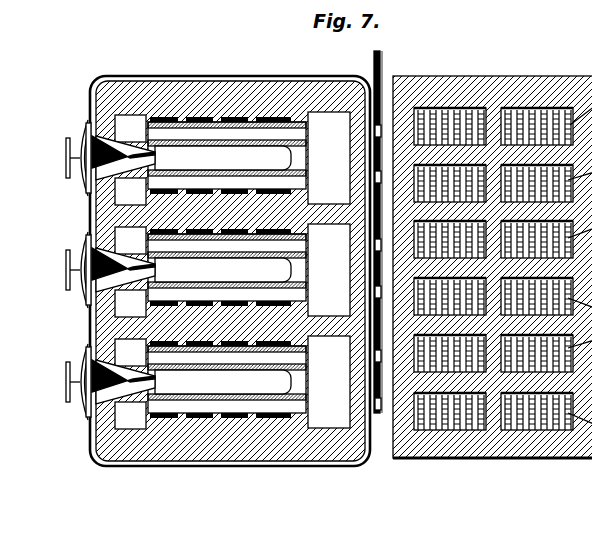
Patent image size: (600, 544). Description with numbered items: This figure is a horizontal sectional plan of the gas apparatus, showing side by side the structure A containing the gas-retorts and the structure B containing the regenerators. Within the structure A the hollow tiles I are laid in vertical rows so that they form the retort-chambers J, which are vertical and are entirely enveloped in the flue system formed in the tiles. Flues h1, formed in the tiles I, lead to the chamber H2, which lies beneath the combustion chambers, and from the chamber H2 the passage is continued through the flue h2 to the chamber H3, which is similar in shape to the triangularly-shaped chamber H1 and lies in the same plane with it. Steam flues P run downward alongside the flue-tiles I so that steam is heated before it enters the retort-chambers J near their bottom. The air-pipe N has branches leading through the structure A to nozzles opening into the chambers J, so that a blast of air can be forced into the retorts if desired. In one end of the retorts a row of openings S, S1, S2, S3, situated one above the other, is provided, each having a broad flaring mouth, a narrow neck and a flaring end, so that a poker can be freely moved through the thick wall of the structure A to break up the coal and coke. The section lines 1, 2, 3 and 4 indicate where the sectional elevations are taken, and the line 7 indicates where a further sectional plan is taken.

The structure containing the gas-retorts A is at (251, 71).
The structure containing the regenerators B is at (492, 70).
The air-pipe N is at (372, 56).
The triangularly-shaped chamber H1 is at (130, 240).
The chamber H2 is at (329, 270).
The chamber H3 is at (130, 303).
The hollow tiles I is at (176, 396).
The retort-chambers J is at (240, 272).
The flues h1 is at (227, 267).
The flue h2 is at (227, 291).
The steam flues P is at (258, 109).
The poker opening S is at (123, 270).
The poker opening S1 is at (138, 265).
The poker opening S2 is at (68, 180).
The poker opening S3 is at (77, 268).
The section line 1 is at (396, 351).
The section line 2 is at (62, 262).
The section line 3 is at (213, 68).
The section line 4 is at (320, 462).
The section line 7 is at (374, 262).